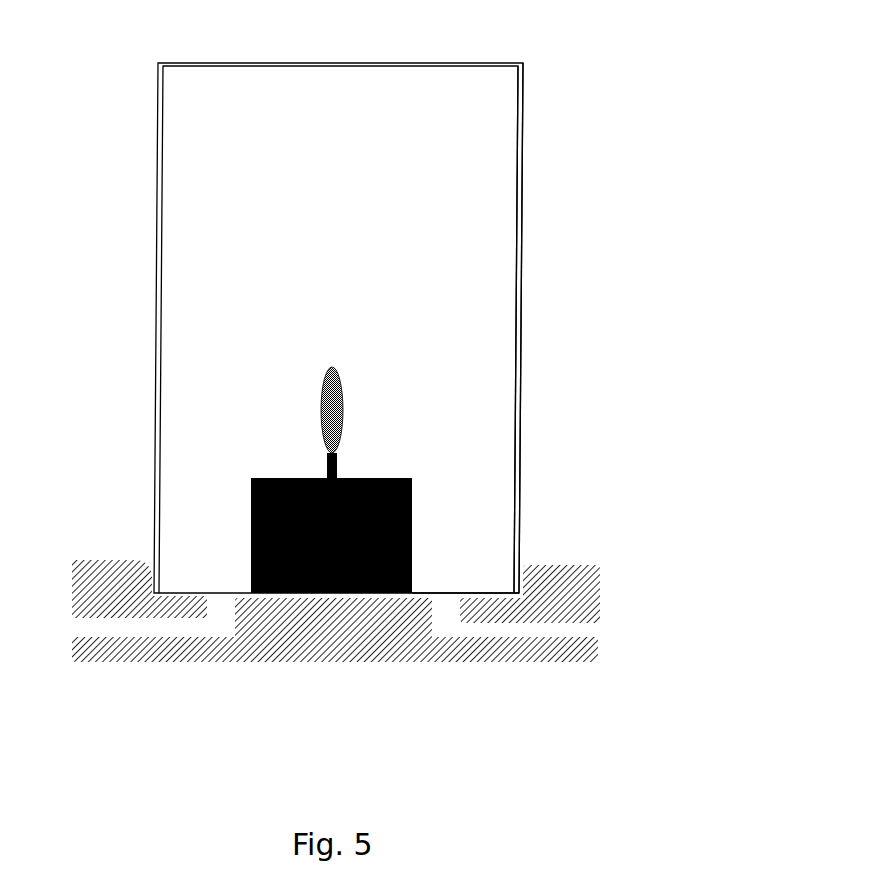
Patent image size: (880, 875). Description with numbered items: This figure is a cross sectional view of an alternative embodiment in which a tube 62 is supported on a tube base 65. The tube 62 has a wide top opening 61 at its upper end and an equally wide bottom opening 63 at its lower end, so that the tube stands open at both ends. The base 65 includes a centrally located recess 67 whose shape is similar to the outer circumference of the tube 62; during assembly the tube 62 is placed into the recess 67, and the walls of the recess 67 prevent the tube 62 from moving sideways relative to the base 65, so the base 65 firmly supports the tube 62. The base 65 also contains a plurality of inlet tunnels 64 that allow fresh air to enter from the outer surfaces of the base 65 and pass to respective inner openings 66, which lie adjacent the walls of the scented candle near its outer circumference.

The wide top opening 61 is at (375, 54).
The tube 62 is at (525, 273).
The bottom opening 63 is at (178, 587).
The inlet tunnels 64 is at (607, 627).
The tube base 65 is at (607, 568).
The inner openings 66 is at (447, 611).
The recess 67 is at (527, 567).